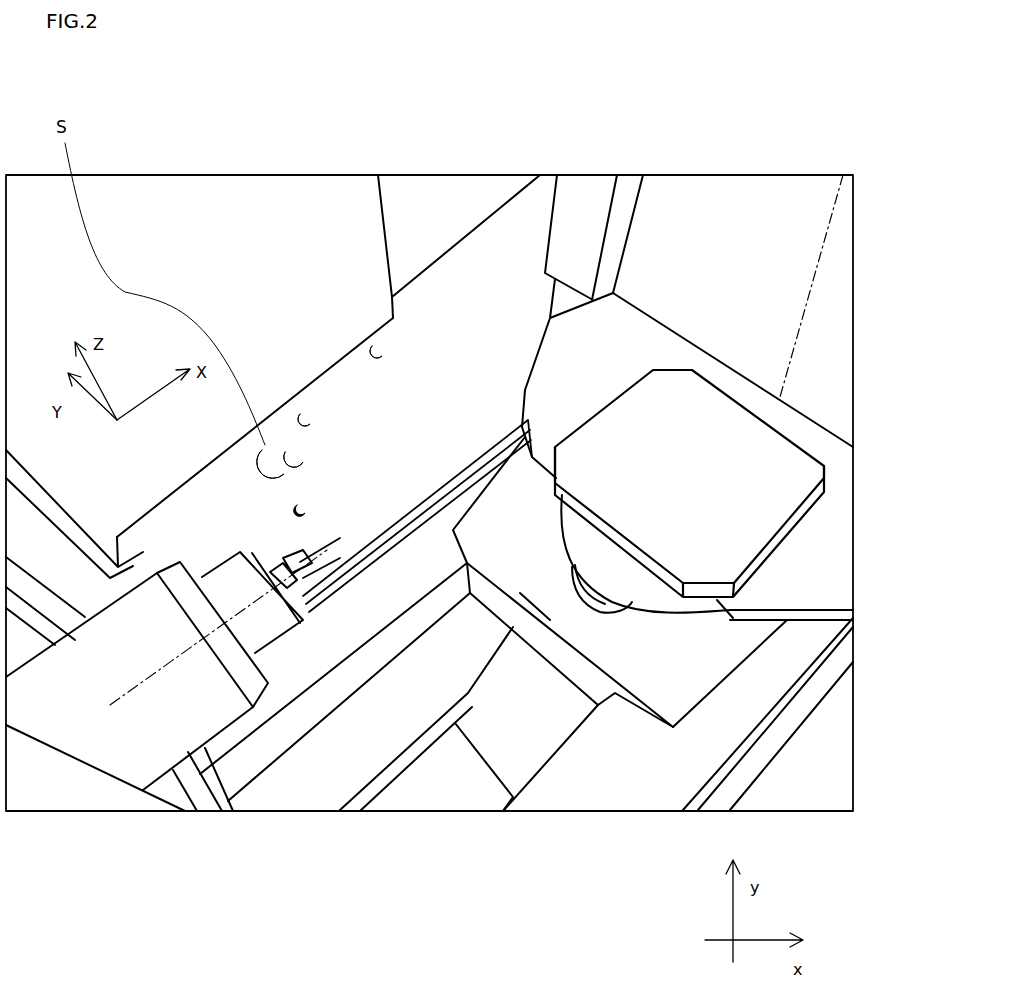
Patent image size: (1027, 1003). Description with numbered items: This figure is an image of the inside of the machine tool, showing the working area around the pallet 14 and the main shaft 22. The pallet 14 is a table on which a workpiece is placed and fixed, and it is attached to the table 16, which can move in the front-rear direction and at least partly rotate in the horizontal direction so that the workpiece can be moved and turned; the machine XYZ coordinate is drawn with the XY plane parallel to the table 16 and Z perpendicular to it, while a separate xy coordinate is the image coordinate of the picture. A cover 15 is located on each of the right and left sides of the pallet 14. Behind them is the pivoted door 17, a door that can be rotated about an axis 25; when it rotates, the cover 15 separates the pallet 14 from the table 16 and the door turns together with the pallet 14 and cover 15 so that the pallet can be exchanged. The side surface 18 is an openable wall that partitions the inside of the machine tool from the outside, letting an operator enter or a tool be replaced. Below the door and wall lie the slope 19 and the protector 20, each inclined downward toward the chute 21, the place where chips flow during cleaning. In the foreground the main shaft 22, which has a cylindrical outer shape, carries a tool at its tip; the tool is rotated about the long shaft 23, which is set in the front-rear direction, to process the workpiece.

The pallet 14 is at (740, 510).
The cover 15 is at (558, 392).
The table 16 is at (642, 645).
The pivoted door 17 is at (817, 395).
The side surface 18 is at (167, 240).
The slope 19 is at (347, 430).
The protector 20 is at (410, 580).
The chute 21 is at (503, 698).
The main shaft 22 is at (198, 703).
The long shaft 23 is at (100, 727).
The axis 25 is at (813, 283).